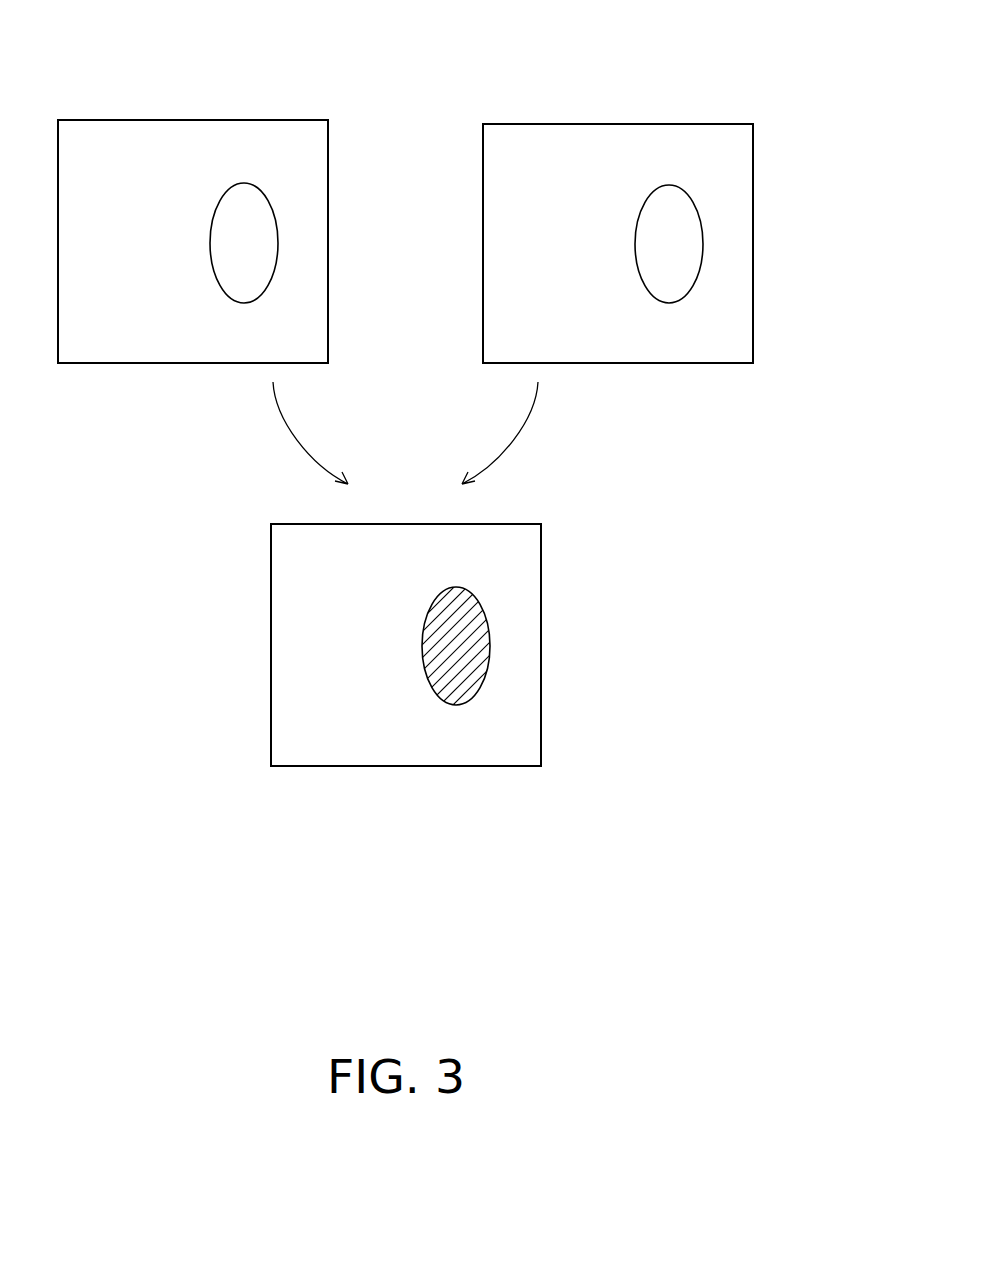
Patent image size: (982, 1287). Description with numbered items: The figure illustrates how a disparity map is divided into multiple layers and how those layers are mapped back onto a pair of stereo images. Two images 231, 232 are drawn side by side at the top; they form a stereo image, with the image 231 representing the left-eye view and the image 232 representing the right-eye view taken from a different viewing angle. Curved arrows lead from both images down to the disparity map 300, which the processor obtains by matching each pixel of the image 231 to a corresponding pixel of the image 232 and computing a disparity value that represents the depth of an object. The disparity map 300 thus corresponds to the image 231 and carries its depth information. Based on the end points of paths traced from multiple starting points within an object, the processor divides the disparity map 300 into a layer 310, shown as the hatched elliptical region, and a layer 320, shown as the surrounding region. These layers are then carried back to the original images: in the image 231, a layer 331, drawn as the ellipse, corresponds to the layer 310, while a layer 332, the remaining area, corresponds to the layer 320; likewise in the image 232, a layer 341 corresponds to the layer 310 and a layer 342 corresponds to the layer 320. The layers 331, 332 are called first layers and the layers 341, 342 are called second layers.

The image 231 is at (192, 120).
The image 232 is at (625, 123).
The layer 331 is at (266, 265).
The layer 332 is at (324, 160).
The layer 341 is at (689, 260).
The layer 342 is at (745, 170).
The disparity map 300 is at (498, 524).
The layer 310 is at (490, 645).
The layer 320 is at (521, 730).